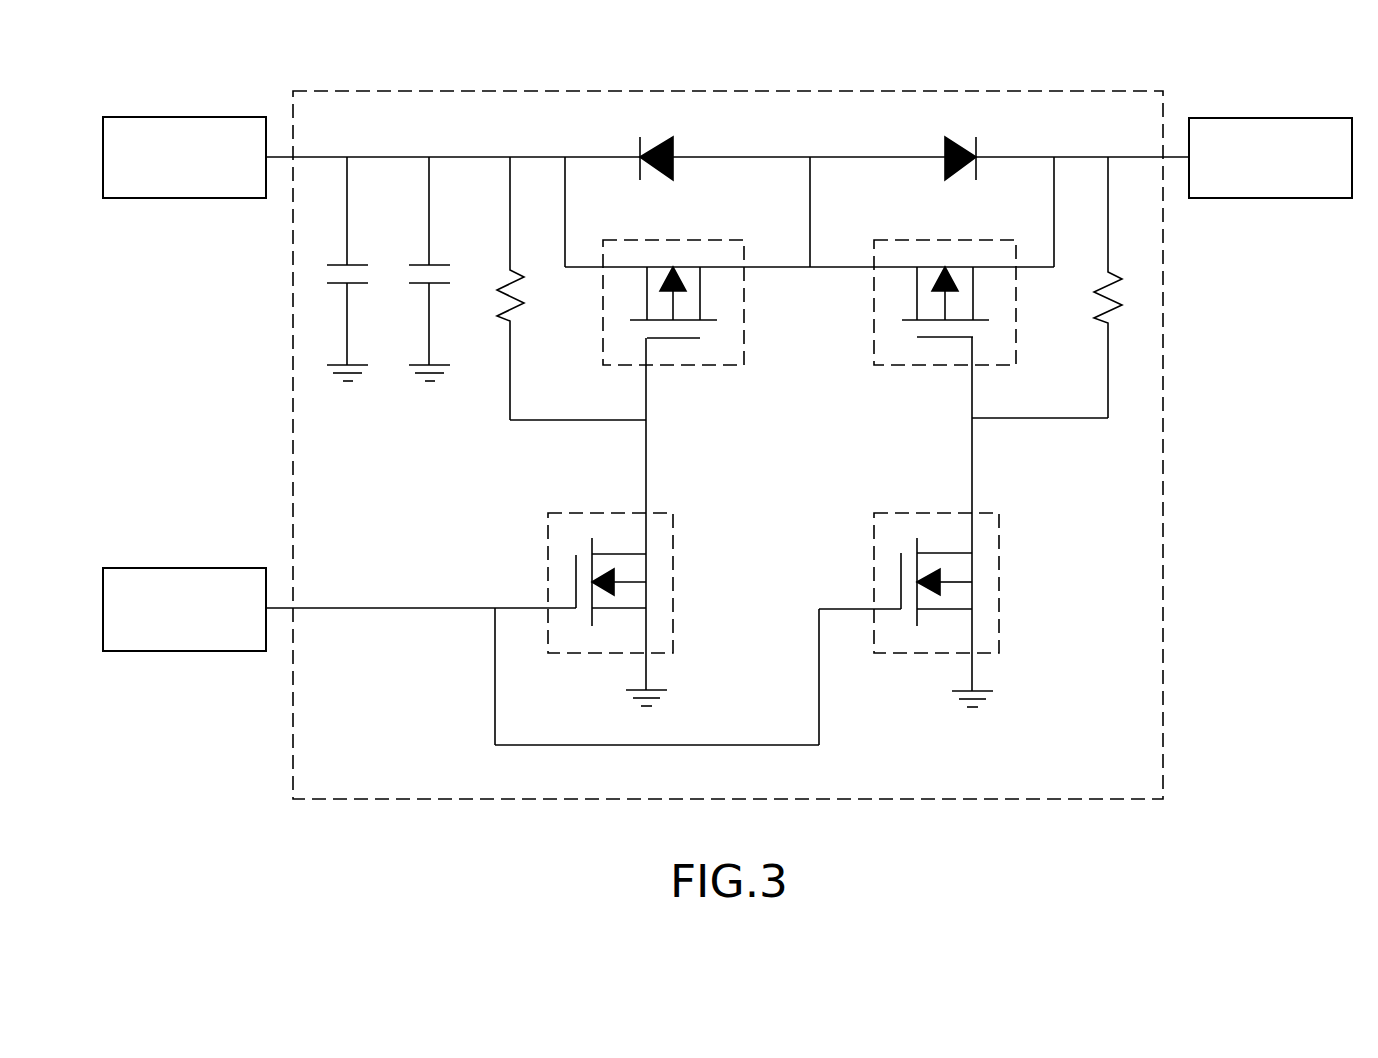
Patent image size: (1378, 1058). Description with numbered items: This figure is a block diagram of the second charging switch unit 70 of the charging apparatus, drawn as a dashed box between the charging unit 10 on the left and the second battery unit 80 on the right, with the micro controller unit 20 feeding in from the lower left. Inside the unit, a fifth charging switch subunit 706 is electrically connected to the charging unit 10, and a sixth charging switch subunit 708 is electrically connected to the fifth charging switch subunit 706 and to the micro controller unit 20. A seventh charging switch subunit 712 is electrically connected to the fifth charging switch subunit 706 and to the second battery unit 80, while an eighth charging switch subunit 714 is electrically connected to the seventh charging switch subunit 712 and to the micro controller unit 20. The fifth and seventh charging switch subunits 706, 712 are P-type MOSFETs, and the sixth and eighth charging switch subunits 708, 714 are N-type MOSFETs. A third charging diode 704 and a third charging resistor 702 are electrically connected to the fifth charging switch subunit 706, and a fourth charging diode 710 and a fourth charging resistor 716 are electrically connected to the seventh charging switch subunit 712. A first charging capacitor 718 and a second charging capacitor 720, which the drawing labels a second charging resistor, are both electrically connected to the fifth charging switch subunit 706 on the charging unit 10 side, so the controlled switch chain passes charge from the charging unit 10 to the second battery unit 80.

The charging unit 10 is at (185, 117).
The micro controller unit 20 is at (185, 568).
The second charging switch unit 70 is at (1107, 792).
The second battery unit 80 is at (1272, 117).
The third charging resistor 702 is at (527, 295).
The third charging diode 704 is at (653, 140).
The fifth charging switch subunit 706 is at (672, 358).
The sixth charging switch subunit 708 is at (667, 582).
The fourth charging diode 710 is at (960, 140).
The seventh charging switch subunit 712 is at (943, 367).
The eighth charging switch subunit 714 is at (993, 582).
The fourth charging resistor 716 is at (1090, 295).
The first charging capacitor 718 is at (337, 288).
The second charging capacitor 720 is at (440, 288).